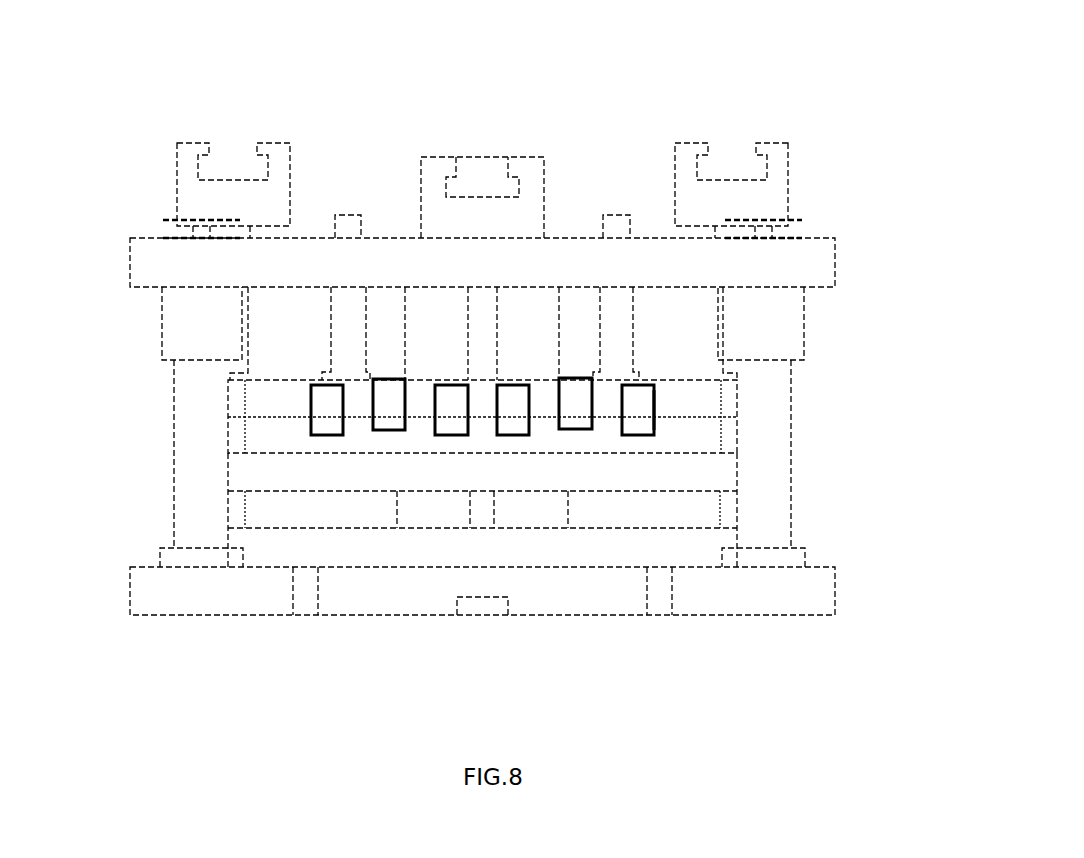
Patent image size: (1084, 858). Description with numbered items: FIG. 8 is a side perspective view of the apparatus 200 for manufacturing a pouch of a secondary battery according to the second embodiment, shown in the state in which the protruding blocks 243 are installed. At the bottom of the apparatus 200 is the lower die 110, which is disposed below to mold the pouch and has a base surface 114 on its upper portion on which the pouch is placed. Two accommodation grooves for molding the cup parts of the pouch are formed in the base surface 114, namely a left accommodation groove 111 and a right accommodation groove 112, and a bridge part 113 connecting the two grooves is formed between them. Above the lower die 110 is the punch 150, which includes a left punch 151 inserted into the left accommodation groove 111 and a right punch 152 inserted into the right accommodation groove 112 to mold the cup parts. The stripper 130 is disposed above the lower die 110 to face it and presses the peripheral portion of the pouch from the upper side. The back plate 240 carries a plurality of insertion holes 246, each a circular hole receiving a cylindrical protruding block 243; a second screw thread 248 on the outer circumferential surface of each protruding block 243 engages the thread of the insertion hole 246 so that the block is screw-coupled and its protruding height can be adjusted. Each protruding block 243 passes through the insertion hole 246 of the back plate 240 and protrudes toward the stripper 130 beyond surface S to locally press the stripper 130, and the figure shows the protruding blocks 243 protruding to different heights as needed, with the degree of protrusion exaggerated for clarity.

The apparatus for manufacturing a pouch of a secondary battery 200 is at (157, 57).
The punch 150 is at (533, 152).
The left punch 151 is at (423, 300).
The right punch 152 is at (541, 300).
The back plate 240 is at (707, 404).
The insertion hole 246 is at (648, 381).
The second screw thread 248 is at (655, 403).
The protruding block 243 is at (579, 422).
The stripper 130 is at (262, 440).
The lower die 110 is at (615, 538).
The base surface 114 is at (652, 490).
The left accommodation groove 111 is at (435, 507).
The right accommodation groove 112 is at (538, 507).
The bridge part 113 is at (488, 490).